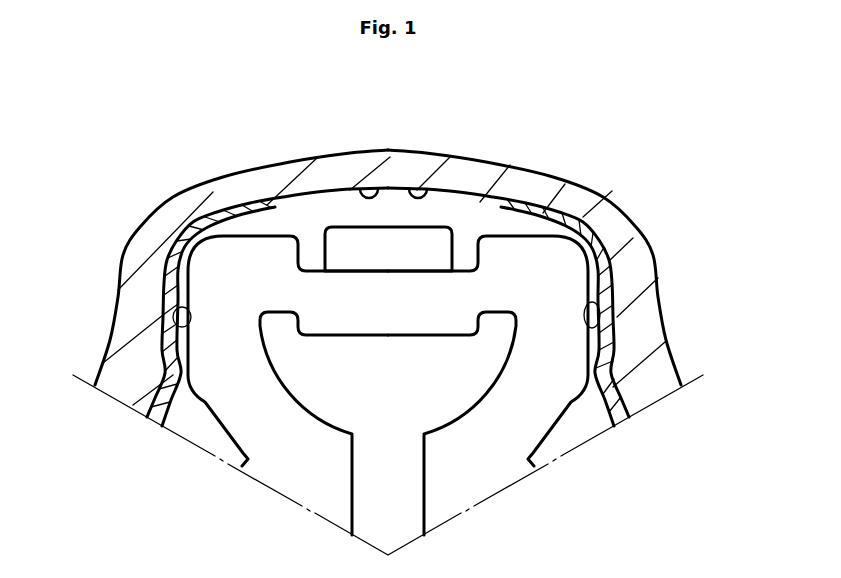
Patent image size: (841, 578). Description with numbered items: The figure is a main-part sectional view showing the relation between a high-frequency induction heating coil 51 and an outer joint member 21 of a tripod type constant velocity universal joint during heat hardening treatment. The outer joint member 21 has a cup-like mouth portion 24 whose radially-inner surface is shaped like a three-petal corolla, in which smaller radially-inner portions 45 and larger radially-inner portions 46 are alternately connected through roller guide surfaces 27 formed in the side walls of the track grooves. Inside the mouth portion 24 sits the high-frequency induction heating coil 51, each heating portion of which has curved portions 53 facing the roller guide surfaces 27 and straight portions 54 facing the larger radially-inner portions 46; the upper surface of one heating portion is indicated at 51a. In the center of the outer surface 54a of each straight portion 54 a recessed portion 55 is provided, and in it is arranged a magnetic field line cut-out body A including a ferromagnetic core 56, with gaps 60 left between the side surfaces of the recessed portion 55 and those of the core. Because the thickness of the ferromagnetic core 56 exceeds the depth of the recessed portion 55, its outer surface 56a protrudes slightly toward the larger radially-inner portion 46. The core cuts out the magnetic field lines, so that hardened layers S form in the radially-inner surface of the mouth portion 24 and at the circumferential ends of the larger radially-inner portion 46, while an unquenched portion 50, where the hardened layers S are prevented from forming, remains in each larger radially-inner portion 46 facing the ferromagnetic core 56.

The outer joint member 21 is at (612, 203).
The mouth portion 24 is at (644, 243).
The roller guide surfaces 27 is at (182, 317).
The smaller radially-inner portions 45 is at (600, 418).
The larger radially-inner portions 46 is at (421, 196).
The unquenched portion 50 is at (364, 190).
The high-frequency induction heating coil 51 is at (527, 257).
The holder top surface 51a is at (265, 247).
The curved portions 53 is at (558, 355).
The straight portions 54 is at (396, 303).
The outer surface of the straight portion 54a is at (238, 231).
The recessed portion 55 is at (318, 270).
The ferromagnetic core 56 is at (348, 240).
The outer surface of the ferromagnetic core 56a is at (395, 226).
The gaps 60 is at (308, 253).
The magnetic field line cut-out body A is at (436, 248).
The hardened layers S is at (172, 380).